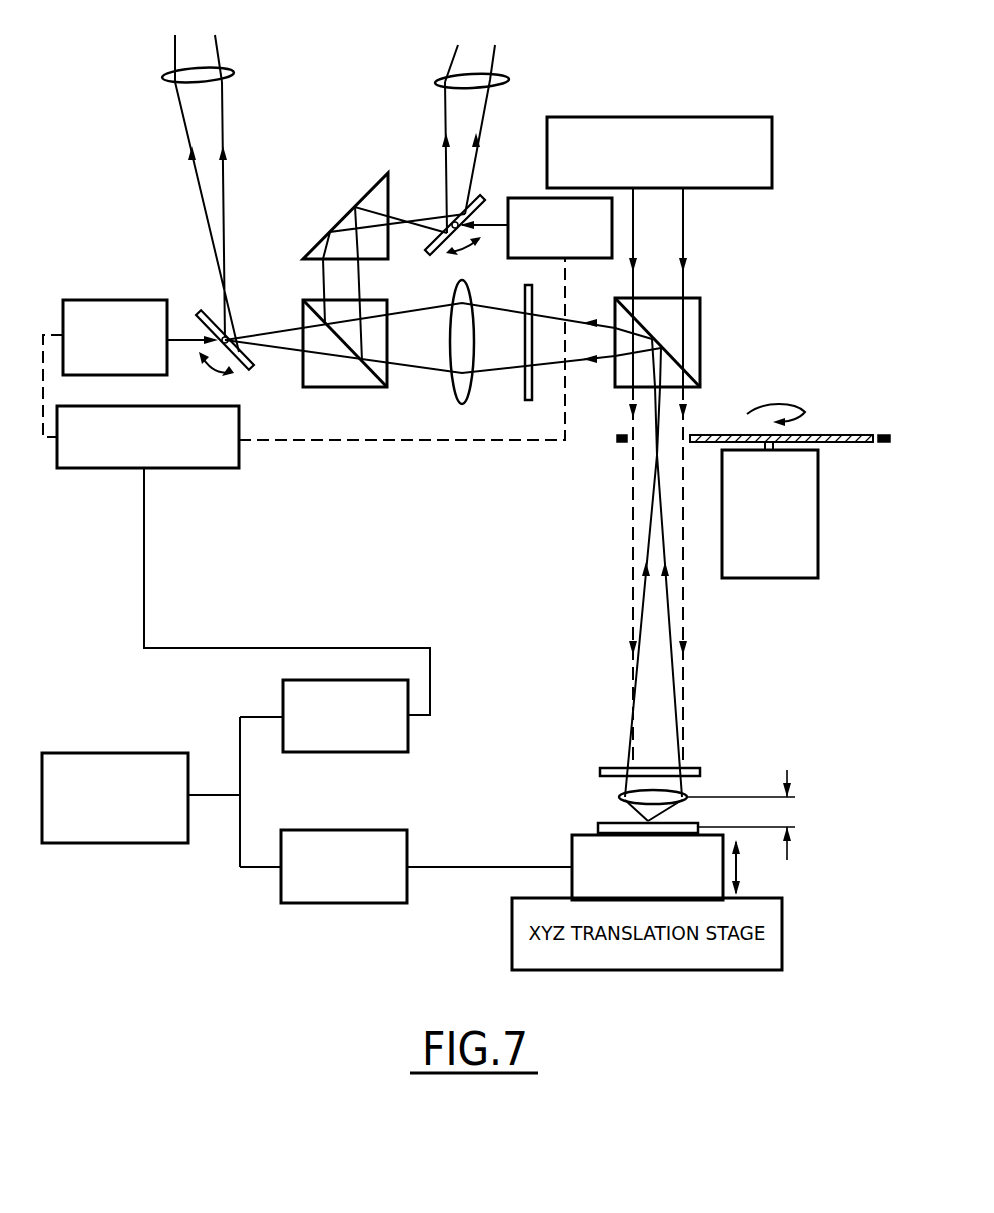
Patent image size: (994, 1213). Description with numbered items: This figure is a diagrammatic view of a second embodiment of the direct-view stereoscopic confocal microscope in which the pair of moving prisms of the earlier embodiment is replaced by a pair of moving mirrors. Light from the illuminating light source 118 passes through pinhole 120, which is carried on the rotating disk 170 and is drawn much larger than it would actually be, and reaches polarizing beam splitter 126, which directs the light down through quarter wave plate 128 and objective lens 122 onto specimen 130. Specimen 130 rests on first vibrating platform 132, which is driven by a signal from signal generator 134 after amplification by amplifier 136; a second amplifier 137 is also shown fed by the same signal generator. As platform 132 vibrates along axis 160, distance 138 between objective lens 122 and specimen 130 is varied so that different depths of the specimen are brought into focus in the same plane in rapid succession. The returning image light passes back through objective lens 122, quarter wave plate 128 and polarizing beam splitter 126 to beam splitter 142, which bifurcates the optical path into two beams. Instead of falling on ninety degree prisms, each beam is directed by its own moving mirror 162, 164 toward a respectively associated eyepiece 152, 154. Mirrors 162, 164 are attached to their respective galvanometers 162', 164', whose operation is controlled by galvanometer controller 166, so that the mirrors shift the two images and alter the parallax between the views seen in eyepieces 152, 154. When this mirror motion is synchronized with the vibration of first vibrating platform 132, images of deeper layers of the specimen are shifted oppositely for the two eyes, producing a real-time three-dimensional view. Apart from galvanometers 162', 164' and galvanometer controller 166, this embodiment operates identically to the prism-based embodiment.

The illuminating light source 118 is at (720, 116).
The pinhole 120 is at (688, 433).
The objective lens 122 is at (620, 797).
The polarizing beam splitter 126 is at (700, 323).
The quarter wave plate 128 is at (697, 768).
The specimen 130 is at (598, 826).
The first vibrating platform 132 is at (572, 848).
The signal generator 134 is at (113, 843).
The amplifier 136 is at (377, 905).
The amplifier 137 is at (408, 748).
The distance 138 is at (790, 812).
The beam splitter 142 is at (343, 389).
The eyepiece 152 is at (247, 52).
The eyepiece 154 is at (509, 79).
The axis 160 is at (736, 868).
The moving mirror 162 is at (191, 314).
The galvanometer 162' is at (115, 302).
The moving mirror 164 is at (483, 199).
The galvanometer 164' is at (648, 228).
The galvanometer controller 166 is at (112, 468).
The disk 170 is at (818, 433).